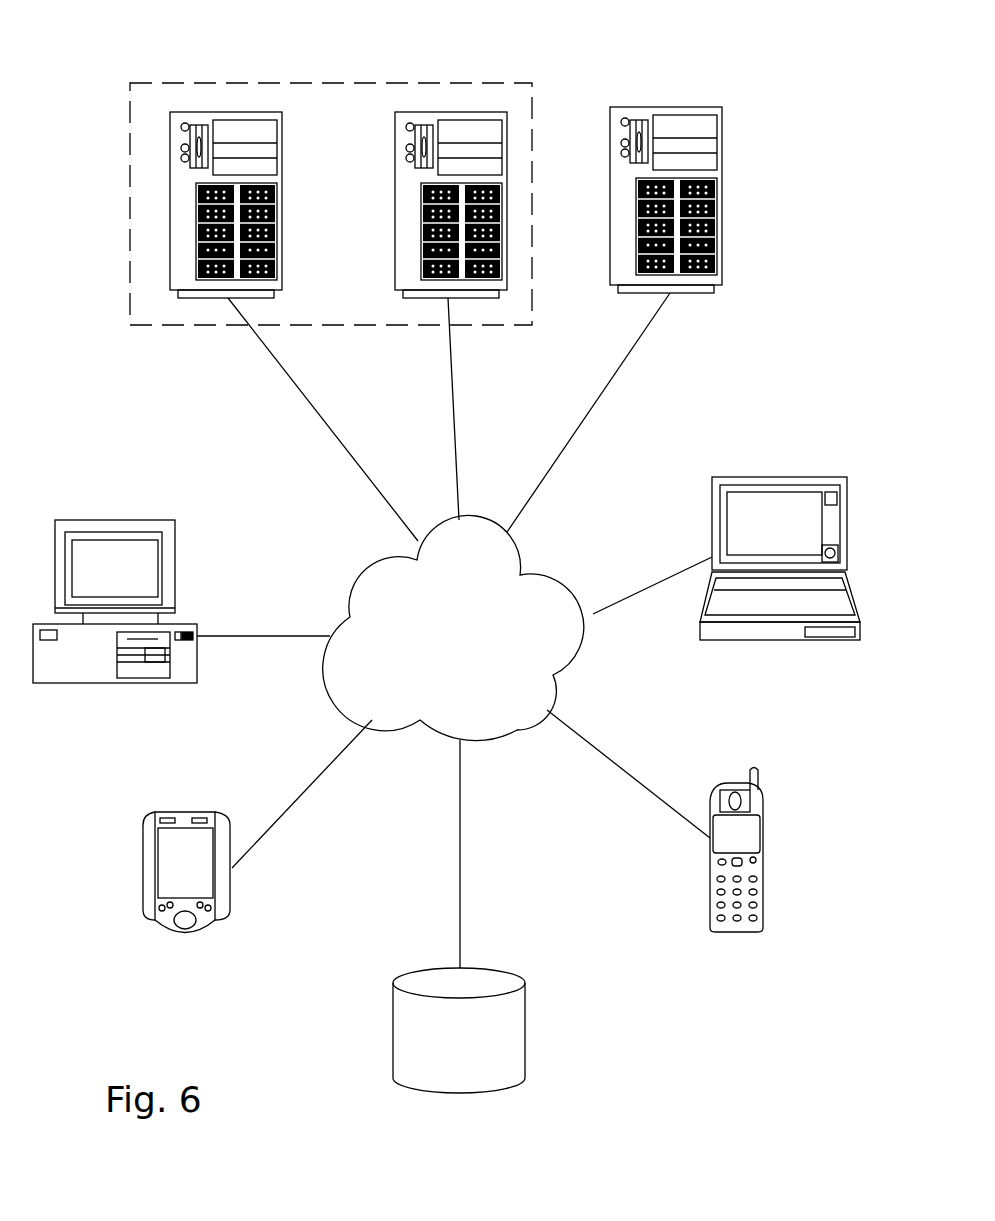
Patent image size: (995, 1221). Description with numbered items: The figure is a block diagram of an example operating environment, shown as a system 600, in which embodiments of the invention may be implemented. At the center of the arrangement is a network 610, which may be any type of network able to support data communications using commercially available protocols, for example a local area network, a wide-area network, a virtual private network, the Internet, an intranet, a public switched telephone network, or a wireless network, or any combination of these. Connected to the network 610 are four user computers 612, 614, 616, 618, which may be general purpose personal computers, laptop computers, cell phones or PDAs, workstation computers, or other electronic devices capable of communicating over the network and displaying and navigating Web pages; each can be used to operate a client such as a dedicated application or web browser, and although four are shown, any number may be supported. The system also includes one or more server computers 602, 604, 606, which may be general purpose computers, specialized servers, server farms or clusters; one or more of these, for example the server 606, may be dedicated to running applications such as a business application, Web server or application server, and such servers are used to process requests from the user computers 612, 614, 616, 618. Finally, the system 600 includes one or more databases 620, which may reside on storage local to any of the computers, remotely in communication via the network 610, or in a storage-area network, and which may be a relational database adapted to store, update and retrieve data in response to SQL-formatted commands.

The system 600 is at (590, 80).
The server computer 602 is at (207, 112).
The server computer 604 is at (443, 112).
The server computer 606 is at (722, 200).
The network 610 is at (453, 627).
The user computer 612 is at (110, 520).
The user computer 614 is at (775, 477).
The user computer 616 is at (735, 932).
The user computer 618 is at (182, 937).
The database 620 is at (459, 1030).